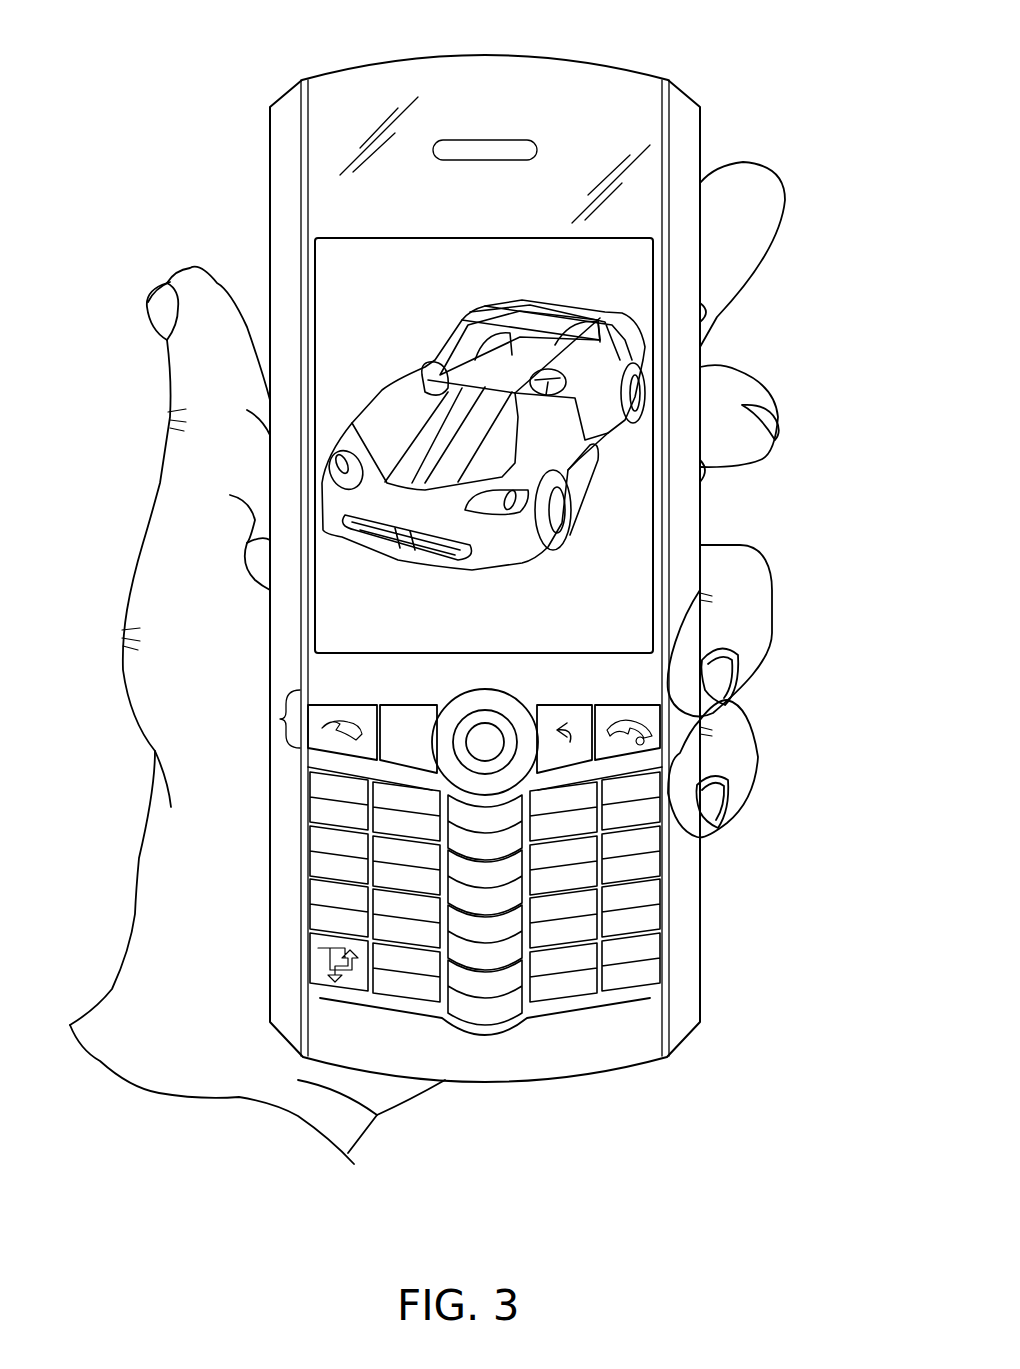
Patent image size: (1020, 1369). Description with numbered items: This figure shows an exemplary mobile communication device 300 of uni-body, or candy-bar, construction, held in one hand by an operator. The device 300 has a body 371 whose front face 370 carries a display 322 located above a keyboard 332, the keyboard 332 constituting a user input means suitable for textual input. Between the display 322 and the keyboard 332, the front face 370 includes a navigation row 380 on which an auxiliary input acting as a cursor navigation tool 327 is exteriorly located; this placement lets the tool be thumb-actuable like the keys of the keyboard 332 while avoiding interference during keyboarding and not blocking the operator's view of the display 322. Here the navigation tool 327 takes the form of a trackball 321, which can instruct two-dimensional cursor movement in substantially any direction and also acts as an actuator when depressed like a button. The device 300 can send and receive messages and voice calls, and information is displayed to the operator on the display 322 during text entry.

The mobile communication device 300 is at (448, 542).
The front face 370 is at (675, 147).
The body 371 is at (265, 114).
The display 322 is at (350, 283).
The navigation row 380 is at (282, 720).
The trackball 321 is at (479, 742).
The cursor navigation tool 327 is at (518, 745).
The keyboard 332 is at (498, 1042).